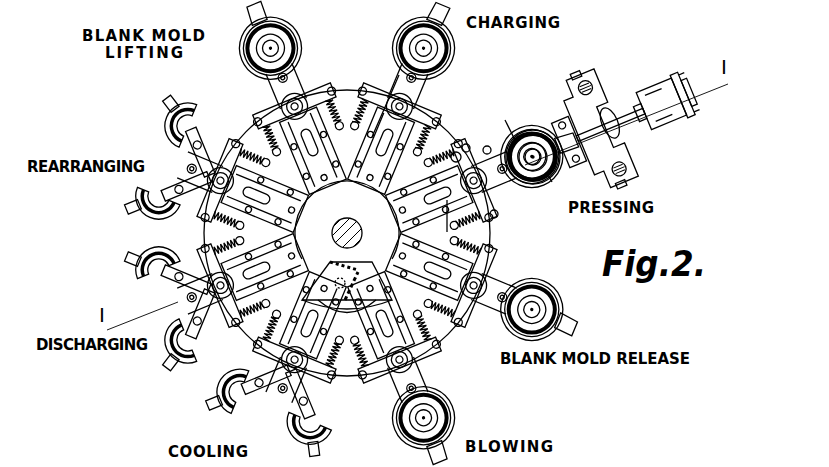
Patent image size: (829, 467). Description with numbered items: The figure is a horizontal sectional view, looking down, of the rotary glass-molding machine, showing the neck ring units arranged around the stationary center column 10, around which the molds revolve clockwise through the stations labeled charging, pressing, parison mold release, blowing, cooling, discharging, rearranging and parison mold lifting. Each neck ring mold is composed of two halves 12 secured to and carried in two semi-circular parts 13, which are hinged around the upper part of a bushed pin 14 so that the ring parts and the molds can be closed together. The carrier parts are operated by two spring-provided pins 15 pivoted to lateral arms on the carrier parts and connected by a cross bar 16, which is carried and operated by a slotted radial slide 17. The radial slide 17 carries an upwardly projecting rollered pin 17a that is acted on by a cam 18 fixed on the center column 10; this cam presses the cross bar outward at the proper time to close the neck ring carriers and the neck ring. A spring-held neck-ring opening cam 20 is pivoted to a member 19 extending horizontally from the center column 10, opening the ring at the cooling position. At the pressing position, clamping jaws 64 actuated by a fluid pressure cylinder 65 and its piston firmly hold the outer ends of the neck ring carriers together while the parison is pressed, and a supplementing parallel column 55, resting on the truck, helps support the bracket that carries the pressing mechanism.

The stationary center column 10 is at (387, 273).
The neck ring mold halves 12 is at (533, 142).
The semi-circular parts 13 is at (512, 130).
The bushed pin 14 is at (488, 146).
The pins 15 is at (467, 144).
The cross bar 16 is at (456, 152).
The radial slide 17 is at (470, 228).
The rollered pin 17a is at (372, 137).
The cam 18 is at (352, 203).
The member 19 is at (390, 283).
The neck-ring opening cam 20 is at (352, 303).
The supplementing parallel column 55 is at (587, 88).
The clamping jaws 64 is at (557, 140).
The fluid pressure cylinder 65 is at (672, 128).